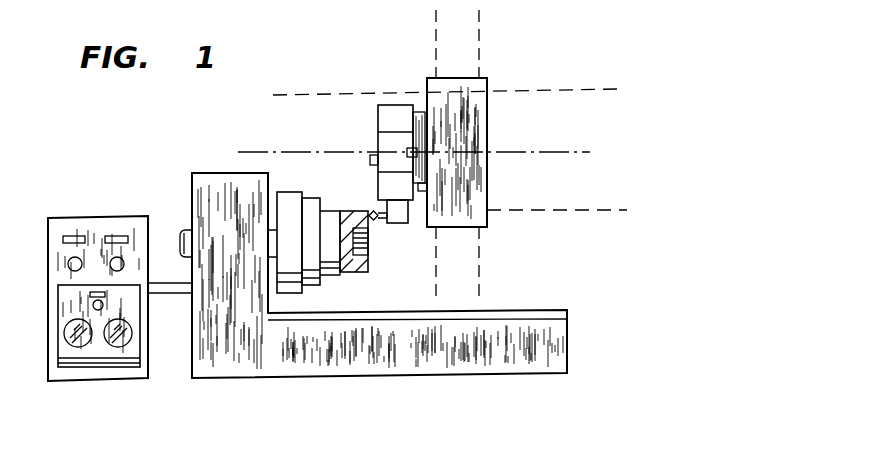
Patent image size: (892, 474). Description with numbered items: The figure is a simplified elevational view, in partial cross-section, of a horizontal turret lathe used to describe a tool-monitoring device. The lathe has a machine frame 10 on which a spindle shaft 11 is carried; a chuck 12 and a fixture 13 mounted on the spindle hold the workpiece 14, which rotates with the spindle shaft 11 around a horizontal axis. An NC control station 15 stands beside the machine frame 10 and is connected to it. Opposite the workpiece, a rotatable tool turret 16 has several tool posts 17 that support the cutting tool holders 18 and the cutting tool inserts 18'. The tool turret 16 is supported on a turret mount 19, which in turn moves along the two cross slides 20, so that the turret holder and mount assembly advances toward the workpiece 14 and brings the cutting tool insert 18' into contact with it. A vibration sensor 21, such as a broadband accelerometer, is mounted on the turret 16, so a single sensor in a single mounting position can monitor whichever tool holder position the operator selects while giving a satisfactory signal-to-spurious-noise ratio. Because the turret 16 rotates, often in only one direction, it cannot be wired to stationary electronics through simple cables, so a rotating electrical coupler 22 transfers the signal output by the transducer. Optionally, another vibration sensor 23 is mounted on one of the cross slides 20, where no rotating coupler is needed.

The machine frame 10 is at (568, 342).
The spindle shaft 11 is at (185, 225).
The chuck 12 is at (287, 192).
The fixture 13 is at (308, 192).
The workpiece 14 is at (368, 270).
The NC control station 15 is at (95, 217).
The rotatable tool turret 16 is at (385, 105).
The tool post 17 is at (408, 223).
The cutting tool holder 18 is at (365, 193).
The cutting tool insert 18' is at (385, 239).
The turret mount 19 is at (480, 140).
The cross slides 20 is at (478, 35).
The vibration sensor 21 is at (370, 158).
The rotating electrical coupler 22 is at (407, 152).
The vibration sensor 23 is at (427, 188).